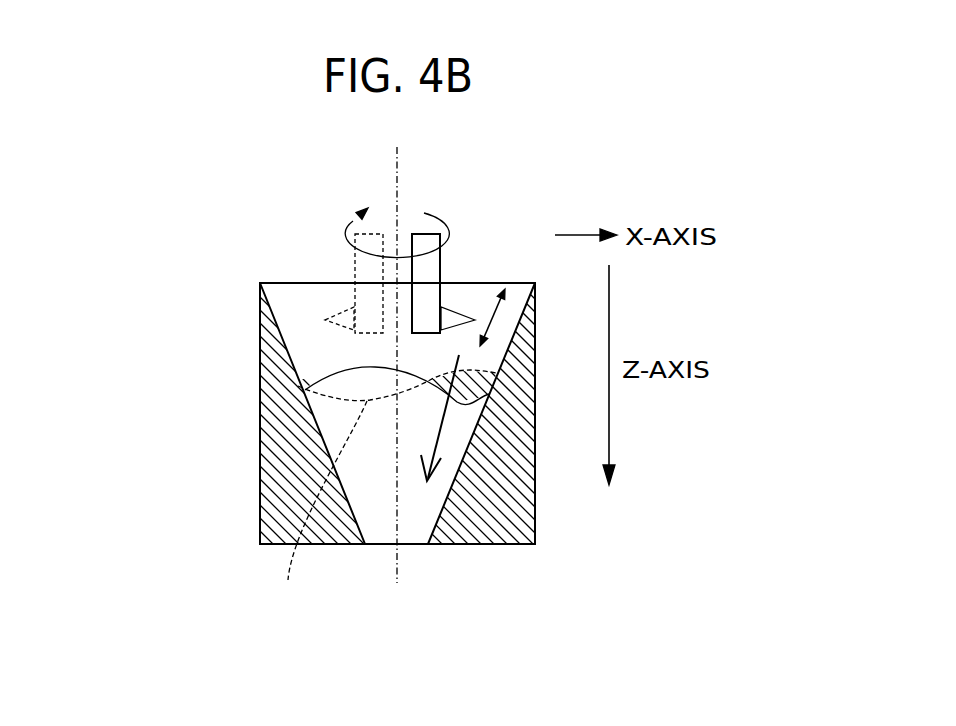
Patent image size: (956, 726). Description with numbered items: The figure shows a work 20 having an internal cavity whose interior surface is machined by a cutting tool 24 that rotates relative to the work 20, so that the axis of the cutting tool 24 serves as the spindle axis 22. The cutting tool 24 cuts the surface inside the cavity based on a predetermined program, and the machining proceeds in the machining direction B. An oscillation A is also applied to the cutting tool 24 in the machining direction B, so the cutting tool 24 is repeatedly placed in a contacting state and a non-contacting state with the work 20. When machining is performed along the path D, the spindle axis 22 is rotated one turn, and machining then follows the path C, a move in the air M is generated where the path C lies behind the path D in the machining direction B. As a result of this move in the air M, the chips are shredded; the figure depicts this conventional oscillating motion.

The work 20 is at (260, 462).
The spindle axis 22 is at (397, 351).
The cutting tool 24 is at (440, 259).
The oscillation A is at (490, 316).
The machining direction B is at (437, 419).
The path C is at (388, 493).
The path D is at (340, 374).
The move in the air M is at (305, 390).